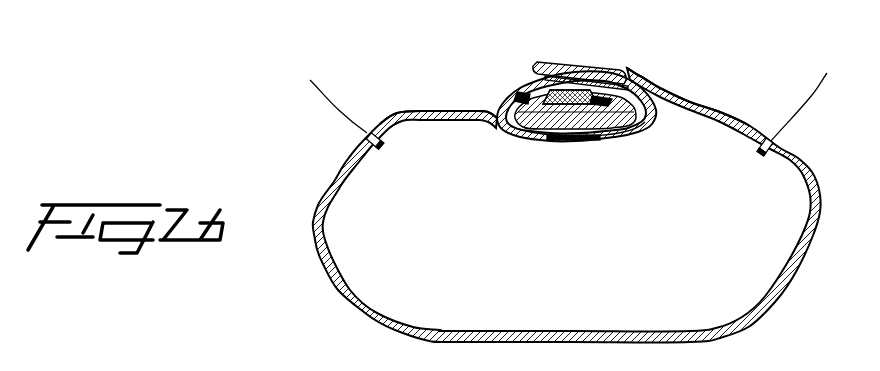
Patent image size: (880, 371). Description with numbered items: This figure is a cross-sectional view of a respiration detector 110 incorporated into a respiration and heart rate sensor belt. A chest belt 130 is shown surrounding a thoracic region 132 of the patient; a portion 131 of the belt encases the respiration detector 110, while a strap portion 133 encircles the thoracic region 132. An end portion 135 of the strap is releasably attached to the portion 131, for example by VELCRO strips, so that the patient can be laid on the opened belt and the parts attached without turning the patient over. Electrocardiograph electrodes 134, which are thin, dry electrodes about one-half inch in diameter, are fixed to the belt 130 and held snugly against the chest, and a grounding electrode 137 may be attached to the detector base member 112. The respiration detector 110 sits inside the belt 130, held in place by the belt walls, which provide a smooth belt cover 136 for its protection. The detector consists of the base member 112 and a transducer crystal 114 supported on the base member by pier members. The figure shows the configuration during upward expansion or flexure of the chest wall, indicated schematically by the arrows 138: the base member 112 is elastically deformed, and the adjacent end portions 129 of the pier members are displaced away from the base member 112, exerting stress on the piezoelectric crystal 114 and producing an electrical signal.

The respiration detector 110 is at (519, 97).
The base member 112 is at (520, 128).
The transducer crystal 114 is at (574, 92).
The end portions of the pier members 129 is at (548, 98).
The chest belt 130 is at (386, 103).
The portion of the belt 131 is at (657, 120).
The thoracic region 132 is at (588, 260).
The strap portion 133 is at (760, 317).
The electrocardiograph electrodes 134 is at (380, 150).
The end portion of the strap 135 is at (560, 60).
The belt cover 136 is at (653, 82).
The grounding electrode 137 is at (567, 141).
The arrows 138 is at (527, 138).